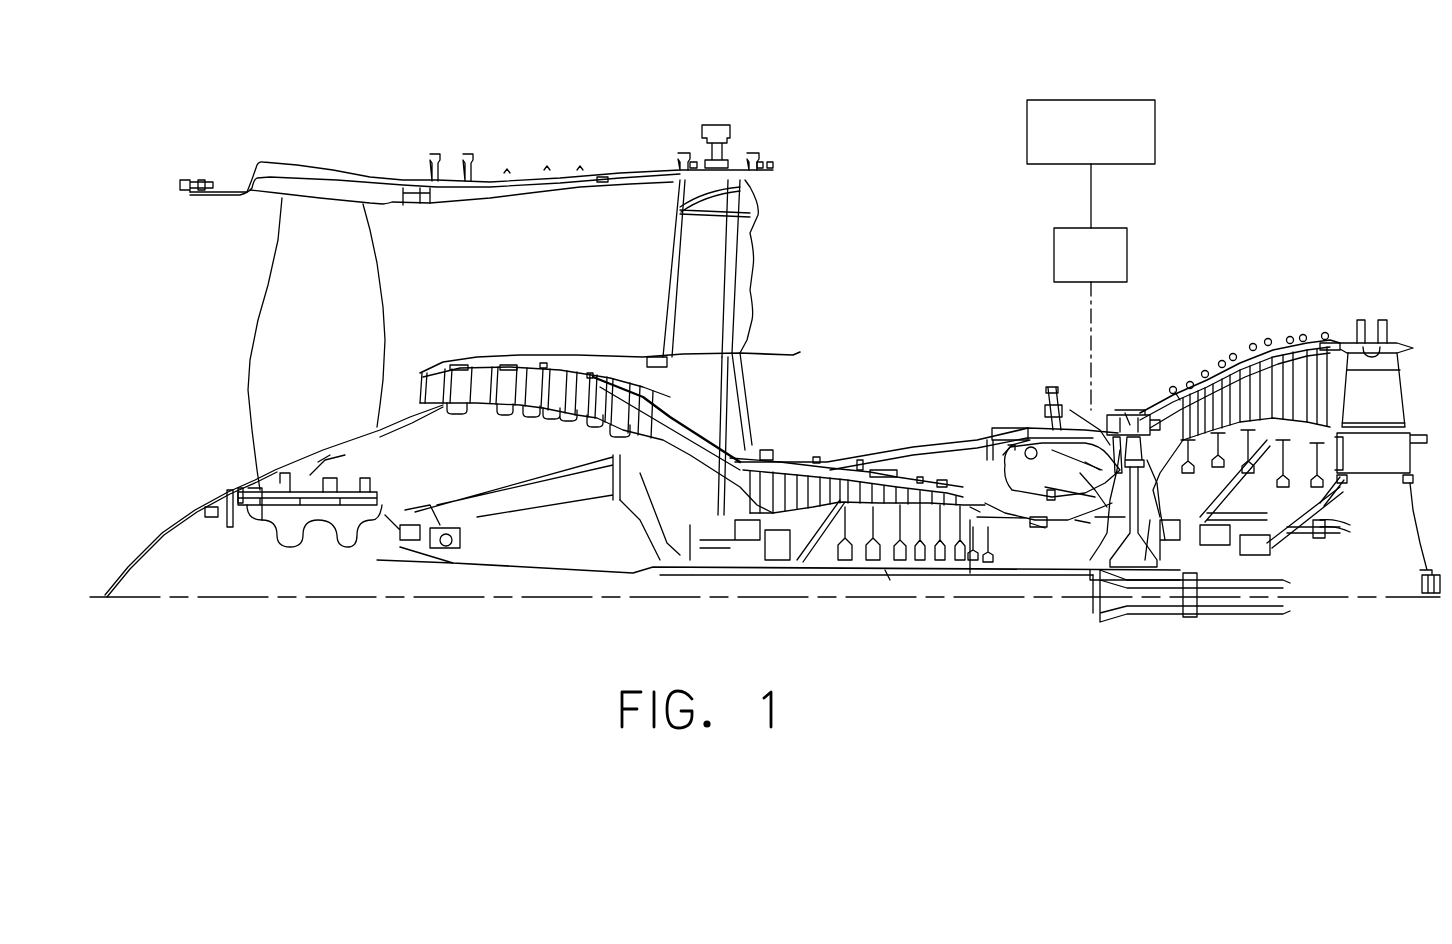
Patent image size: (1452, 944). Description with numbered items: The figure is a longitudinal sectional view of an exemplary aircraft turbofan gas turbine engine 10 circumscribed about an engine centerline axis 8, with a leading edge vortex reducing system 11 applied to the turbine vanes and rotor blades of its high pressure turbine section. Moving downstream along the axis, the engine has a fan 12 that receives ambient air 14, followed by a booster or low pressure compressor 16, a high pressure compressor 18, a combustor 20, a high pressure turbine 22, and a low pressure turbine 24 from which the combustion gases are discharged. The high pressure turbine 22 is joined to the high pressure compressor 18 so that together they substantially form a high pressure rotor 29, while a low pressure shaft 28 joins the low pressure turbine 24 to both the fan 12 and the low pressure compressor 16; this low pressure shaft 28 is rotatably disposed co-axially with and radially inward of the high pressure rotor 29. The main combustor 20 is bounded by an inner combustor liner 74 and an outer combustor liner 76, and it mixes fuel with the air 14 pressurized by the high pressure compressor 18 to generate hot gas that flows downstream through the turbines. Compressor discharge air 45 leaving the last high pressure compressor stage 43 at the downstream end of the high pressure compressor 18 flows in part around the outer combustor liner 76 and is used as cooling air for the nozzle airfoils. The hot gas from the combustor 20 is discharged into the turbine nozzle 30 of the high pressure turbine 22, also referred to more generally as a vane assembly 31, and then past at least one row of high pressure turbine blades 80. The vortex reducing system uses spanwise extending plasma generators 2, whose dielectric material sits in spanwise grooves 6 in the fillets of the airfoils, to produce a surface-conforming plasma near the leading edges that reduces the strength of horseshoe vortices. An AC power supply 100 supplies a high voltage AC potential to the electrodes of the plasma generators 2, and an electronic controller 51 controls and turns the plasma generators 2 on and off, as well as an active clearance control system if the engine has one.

The plasma generator 2 is at (1100, 462).
The spanwise extending groove 6 is at (287, 545).
The engine centerline axis 8 is at (268, 600).
The turbofan gas turbine engine 10 is at (1105, 222).
The leading edge vortex reducing system 11 is at (1095, 410).
The fan 12 is at (335, 328).
The ambient air 14 is at (218, 345).
The booster or low pressure compressor 16 is at (500, 418).
The high pressure compressor 18 is at (845, 457).
The combustor 20 is at (1075, 405).
The high pressure turbine 22 is at (1127, 560).
The low pressure turbine 24 is at (1250, 370).
The low pressure shaft 28 is at (655, 562).
The high pressure rotor 29 is at (1040, 530).
The turbine nozzle 30 is at (1080, 478).
The vane assembly 31 is at (888, 575).
The last high pressure compressor stage 43 is at (973, 523).
The compressor discharge air 45 is at (995, 463).
The electronic controller 51 is at (1077, 147).
The inner combustor liner 74 is at (1083, 523).
The outer combustor liner 76 is at (1028, 438).
The high pressure turbine blade 80 is at (1160, 393).
The AC power supply 100 is at (1068, 270).